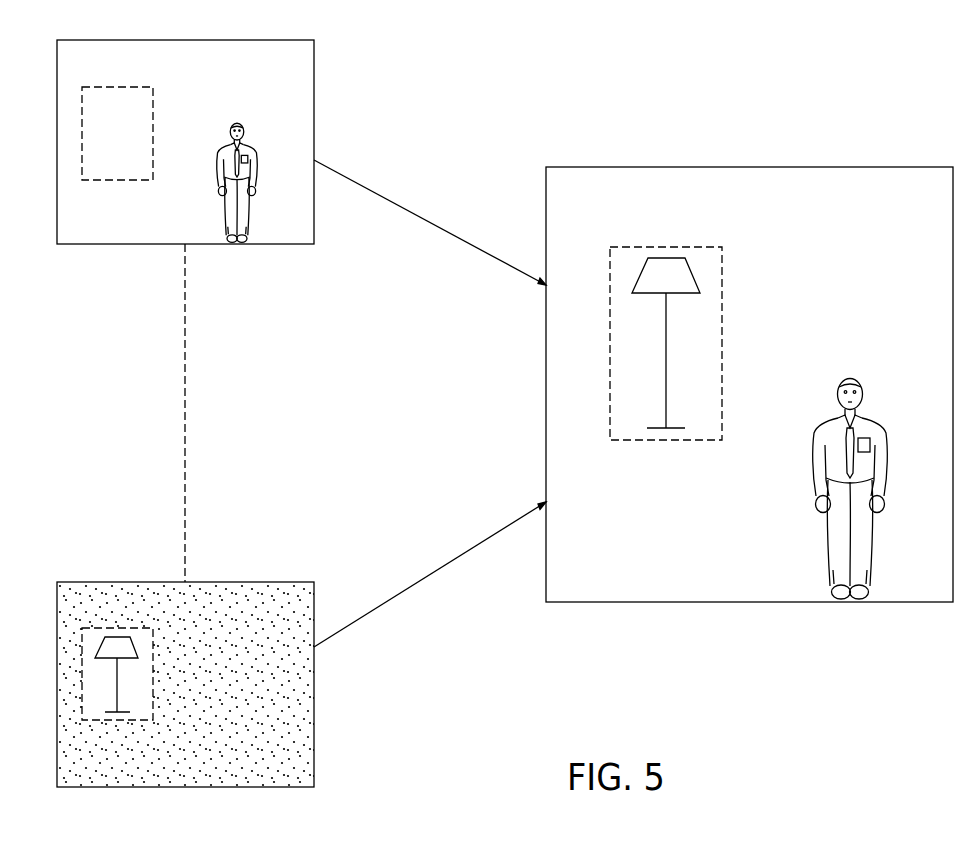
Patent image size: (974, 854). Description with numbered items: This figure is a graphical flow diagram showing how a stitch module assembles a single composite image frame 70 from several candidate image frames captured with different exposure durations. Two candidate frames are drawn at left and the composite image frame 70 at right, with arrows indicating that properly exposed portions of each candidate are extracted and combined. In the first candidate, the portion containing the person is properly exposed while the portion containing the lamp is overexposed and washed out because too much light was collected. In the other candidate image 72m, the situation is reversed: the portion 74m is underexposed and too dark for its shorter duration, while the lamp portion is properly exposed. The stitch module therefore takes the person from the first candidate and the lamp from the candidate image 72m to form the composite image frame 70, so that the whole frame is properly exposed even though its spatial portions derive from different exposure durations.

The composite image frame 70 is at (873, 167).
The candidate image frame 72m is at (314, 737).
The portion 74m is at (257, 708).